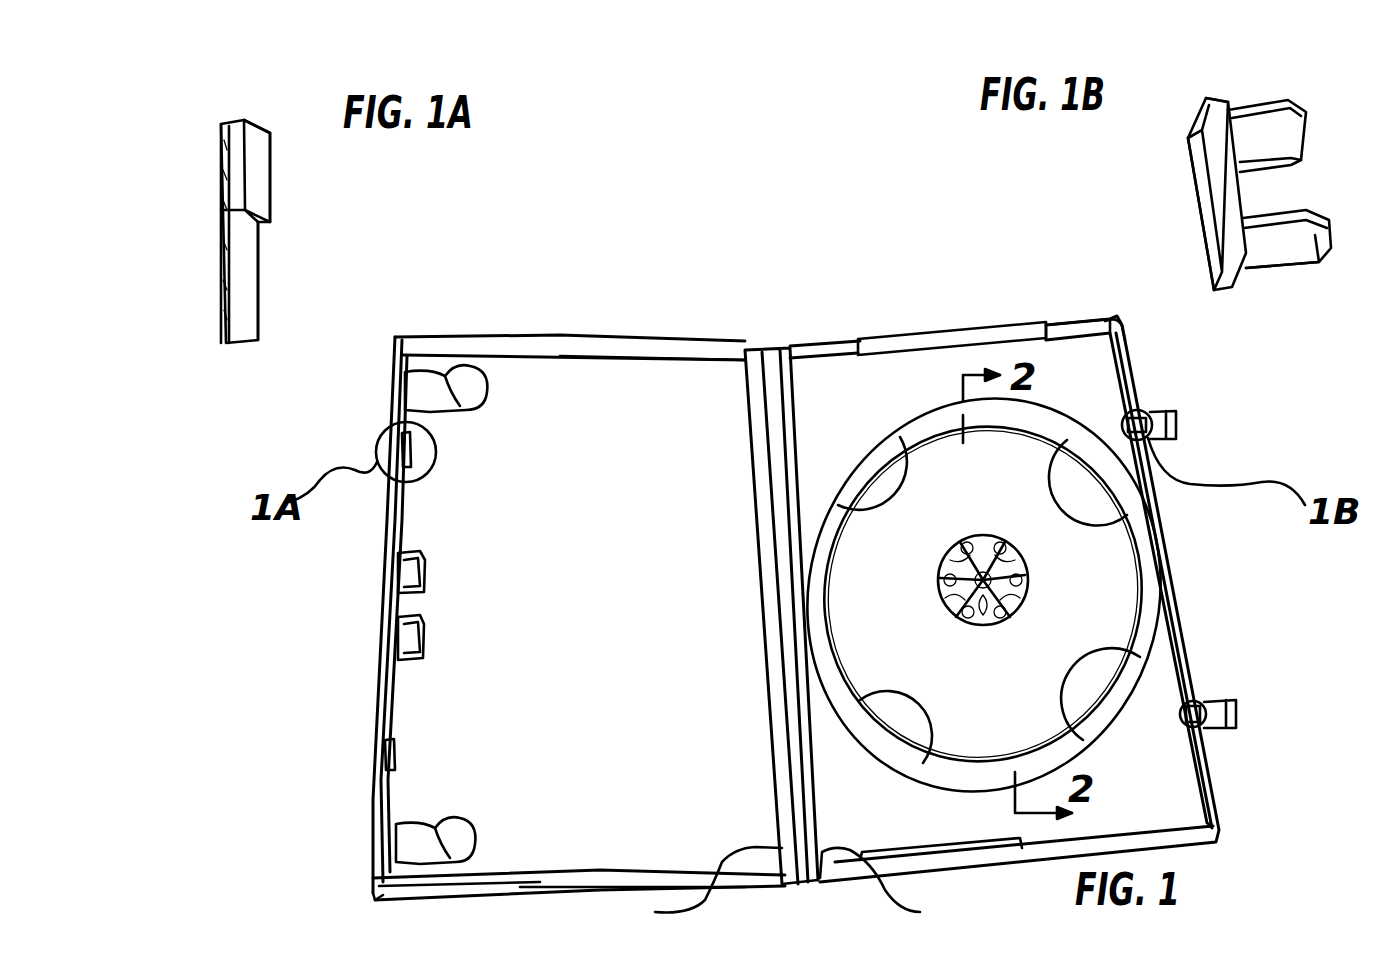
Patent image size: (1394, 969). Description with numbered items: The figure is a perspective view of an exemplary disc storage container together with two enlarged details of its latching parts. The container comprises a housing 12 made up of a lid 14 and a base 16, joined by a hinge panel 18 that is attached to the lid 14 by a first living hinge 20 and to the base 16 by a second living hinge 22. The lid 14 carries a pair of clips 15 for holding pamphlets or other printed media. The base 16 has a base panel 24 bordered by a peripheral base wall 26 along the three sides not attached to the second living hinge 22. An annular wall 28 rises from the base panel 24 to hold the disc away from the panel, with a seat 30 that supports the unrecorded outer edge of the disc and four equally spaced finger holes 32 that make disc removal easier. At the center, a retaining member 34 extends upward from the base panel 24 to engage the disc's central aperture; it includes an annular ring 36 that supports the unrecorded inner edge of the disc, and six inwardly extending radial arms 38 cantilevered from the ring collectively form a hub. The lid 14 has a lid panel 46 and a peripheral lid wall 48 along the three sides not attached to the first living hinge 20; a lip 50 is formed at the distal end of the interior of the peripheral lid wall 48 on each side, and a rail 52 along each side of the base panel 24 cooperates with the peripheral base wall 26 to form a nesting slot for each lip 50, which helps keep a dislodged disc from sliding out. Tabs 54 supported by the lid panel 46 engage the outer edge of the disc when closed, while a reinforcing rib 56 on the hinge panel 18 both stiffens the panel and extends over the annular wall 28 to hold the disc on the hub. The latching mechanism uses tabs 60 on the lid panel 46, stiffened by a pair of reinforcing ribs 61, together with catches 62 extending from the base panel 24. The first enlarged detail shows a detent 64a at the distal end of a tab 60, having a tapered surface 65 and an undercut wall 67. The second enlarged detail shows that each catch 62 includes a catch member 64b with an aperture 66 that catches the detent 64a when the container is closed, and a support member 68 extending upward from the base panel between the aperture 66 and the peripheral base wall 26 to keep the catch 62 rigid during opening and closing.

In FIG. 1, the housing 12 is at (806, 300).
In FIG. 1, the lid 14 is at (579, 617).
In FIG. 1, the clips 15 is at (430, 390).
In FIG. 1, the base 16 is at (888, 533).
In FIG. 1, the hinge panel 18 is at (790, 884).
In FIG. 1, the first living hinge 20 is at (706, 884).
In FIG. 1, the second living hinge 22 is at (888, 885).
In FIG. 1, the base panel 24 is at (1105, 368).
In FIG. 1, the peripheral base wall 26 is at (1078, 268).
In FIG. 1, the annular wall 28 is at (918, 425).
In FIG. 1, the seat 30 is at (1000, 430).
In FIG. 1, the finger holes 32 is at (1117, 710).
In FIG. 1, the retaining member 34 is at (1010, 550).
In FIG. 1, the annular ring 36 is at (975, 622).
In FIG. 1, the radial arms 38 is at (948, 560).
In FIG. 1, the lid panel 46 is at (545, 845).
In FIG. 1, the peripheral lid wall 48 is at (365, 899).
In FIG. 1, the lip 50 is at (583, 345).
In FIG. 1, the rail 52 is at (930, 340).
In FIG. 1, the tabs 54 is at (410, 560).
In FIG. 1, the reinforcing rib 56 is at (778, 605).
In FIG. 1A, the tabs 60 is at (345, 225).
In FIG. 1, the tabs 60 is at (410, 452).
In FIG. 1A, the reinforcing ribs 61 is at (221, 205).
In FIG. 1B, the catches 62 is at (1328, 160).
In FIG. 1, the catches 62 is at (1122, 425).
In FIG. 1A, the detent 64a is at (282, 200).
In FIG. 1B, the catch member 64b is at (1217, 128).
In FIG. 1A, the tapered surface 65 is at (252, 122).
In FIG. 1B, the aperture 66 is at (1212, 222).
In FIG. 1A, the undercut wall 67 is at (258, 232).
In FIG. 1B, the support member 68 is at (1302, 250).